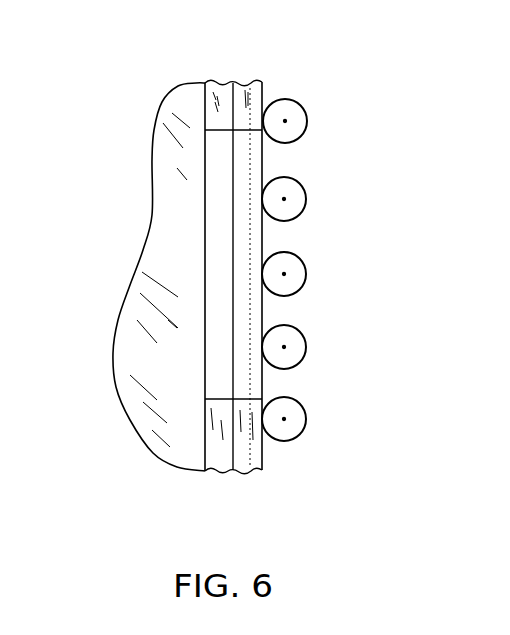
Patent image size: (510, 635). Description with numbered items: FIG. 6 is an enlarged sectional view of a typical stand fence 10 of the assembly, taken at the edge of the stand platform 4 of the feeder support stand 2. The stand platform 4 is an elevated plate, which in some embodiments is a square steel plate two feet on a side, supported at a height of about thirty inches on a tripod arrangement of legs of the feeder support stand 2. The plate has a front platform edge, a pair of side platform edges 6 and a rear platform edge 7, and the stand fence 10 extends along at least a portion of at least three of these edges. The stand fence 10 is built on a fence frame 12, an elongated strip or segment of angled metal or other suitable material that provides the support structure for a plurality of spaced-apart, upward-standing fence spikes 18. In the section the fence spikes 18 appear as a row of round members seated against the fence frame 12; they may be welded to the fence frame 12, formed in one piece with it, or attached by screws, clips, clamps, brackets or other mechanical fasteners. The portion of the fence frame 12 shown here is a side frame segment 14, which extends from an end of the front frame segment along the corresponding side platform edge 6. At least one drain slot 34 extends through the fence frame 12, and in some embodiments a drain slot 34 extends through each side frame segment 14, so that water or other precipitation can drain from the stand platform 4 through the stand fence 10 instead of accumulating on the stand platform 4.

The feeder support stand 2 is at (313, 390).
The stand platform 4 is at (118, 442).
The side platform edge 6 is at (248, 80).
The rear platform edge 7 is at (231, 33).
The stand fence 10 is at (313, 102).
The fence frame 12 is at (265, 311).
The side frame segment 14 is at (254, 456).
The fence spike 18 is at (306, 201).
The drain slot 34 is at (207, 162).